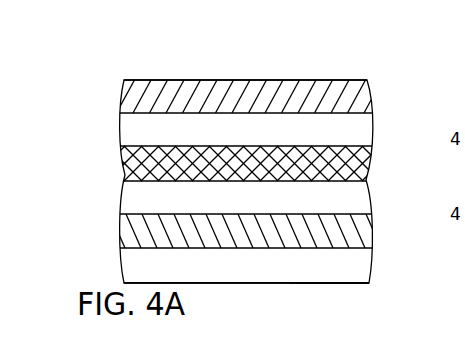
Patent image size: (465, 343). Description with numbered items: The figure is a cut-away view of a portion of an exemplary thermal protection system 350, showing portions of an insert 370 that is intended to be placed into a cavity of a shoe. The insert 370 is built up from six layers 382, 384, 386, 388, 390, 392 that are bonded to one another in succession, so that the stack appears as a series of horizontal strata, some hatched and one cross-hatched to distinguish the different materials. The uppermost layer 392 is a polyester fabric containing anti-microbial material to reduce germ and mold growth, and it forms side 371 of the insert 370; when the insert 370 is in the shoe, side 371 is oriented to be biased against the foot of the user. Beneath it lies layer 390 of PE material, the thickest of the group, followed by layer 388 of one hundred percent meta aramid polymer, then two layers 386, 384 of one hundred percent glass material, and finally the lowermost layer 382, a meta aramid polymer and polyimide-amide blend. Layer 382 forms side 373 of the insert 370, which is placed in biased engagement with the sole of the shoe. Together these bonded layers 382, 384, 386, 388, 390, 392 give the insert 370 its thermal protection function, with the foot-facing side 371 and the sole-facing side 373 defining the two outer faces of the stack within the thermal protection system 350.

The thermal protection system 350 is at (386, 48).
The insert 370 is at (281, 284).
The side 371 is at (162, 80).
The side 373 is at (300, 284).
The layer 382 is at (357, 267).
The layer 384 is at (150, 232).
The layer 386 is at (363, 194).
The layer 388 is at (128, 173).
The layer 390 is at (362, 128).
The layer 392 is at (128, 93).